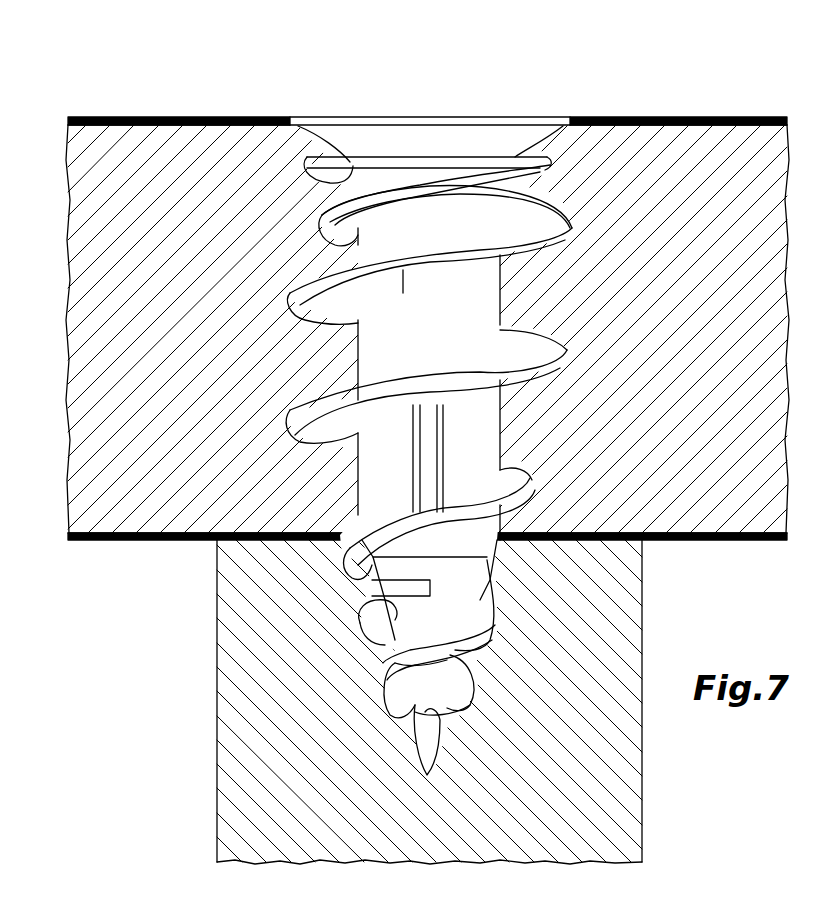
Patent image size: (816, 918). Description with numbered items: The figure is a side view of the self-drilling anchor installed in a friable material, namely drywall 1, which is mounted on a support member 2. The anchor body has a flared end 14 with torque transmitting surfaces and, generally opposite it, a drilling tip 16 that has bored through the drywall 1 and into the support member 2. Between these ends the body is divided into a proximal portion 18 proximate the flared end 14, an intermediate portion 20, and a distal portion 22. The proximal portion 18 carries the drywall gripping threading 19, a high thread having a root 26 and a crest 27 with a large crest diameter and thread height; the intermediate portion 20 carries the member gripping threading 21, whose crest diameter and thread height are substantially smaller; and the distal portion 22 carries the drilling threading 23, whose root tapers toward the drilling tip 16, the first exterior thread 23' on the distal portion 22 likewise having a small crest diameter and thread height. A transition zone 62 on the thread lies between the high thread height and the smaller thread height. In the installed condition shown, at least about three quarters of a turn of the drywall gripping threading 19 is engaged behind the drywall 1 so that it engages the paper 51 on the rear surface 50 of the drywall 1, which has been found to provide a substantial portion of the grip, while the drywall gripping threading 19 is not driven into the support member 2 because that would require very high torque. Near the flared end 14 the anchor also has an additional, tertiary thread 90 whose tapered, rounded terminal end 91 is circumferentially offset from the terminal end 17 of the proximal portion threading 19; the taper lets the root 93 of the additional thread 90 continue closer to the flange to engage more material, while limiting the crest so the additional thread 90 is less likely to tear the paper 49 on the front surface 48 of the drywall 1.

The drywall 1 is at (693, 133).
The support member 2 is at (237, 722).
The flared end 14 is at (498, 133).
The drilling tip 16 is at (432, 774).
The terminal end of proximal portion threading 17 is at (330, 160).
The proximal portion 18 is at (552, 290).
The drywall gripping threading 19 is at (300, 302).
The intermediate portion 20 is at (505, 577).
The member gripping threading 21 is at (360, 562).
The distal portion 22 is at (500, 683).
The drilling threading 23 is at (388, 695).
The first exterior thread at distal portion 23' is at (345, 631).
The root 26 is at (365, 357).
The crest 27 is at (300, 425).
The drywall surface 48 is at (135, 117).
The paper 49 is at (162, 125).
The rear surface 50 is at (718, 541).
The paper 51 is at (150, 533).
The transition zone 62 is at (525, 470).
The additional thread 90 is at (325, 232).
The terminal end 91 is at (540, 152).
The root 93 is at (548, 178).